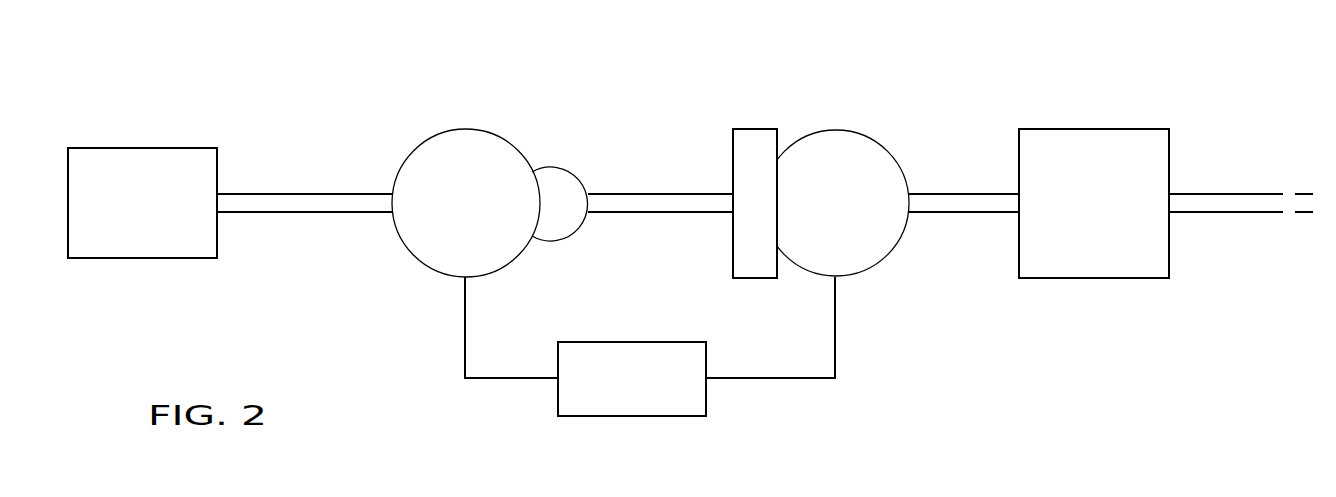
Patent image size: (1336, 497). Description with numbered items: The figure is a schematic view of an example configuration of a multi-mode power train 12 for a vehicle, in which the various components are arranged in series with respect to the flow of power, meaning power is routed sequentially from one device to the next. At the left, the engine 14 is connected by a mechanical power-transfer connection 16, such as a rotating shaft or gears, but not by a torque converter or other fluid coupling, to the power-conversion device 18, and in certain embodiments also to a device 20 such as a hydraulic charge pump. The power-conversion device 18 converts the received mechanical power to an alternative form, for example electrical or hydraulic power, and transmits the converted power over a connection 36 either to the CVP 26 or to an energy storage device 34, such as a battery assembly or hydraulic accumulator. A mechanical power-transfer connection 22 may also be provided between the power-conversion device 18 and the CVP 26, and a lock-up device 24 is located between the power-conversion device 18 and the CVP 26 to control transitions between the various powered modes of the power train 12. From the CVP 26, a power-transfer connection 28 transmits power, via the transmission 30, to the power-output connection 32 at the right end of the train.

The multi-mode power train 12 is at (255, 32).
The engine 14 is at (153, 148).
The mechanical power-transfer connection 16 is at (253, 213).
The power-conversion device 18 is at (437, 130).
The device 20 is at (548, 167).
The mechanical power-transfer connection 22 is at (705, 192).
The lock-up device 24 is at (733, 128).
The CVP 26 is at (833, 128).
The power-transfer connection 28 is at (1000, 212).
The transmission 30 is at (1093, 129).
The power-output connection 32 is at (1268, 213).
The energy storage device 34 is at (632, 416).
The connection 36 is at (780, 378).